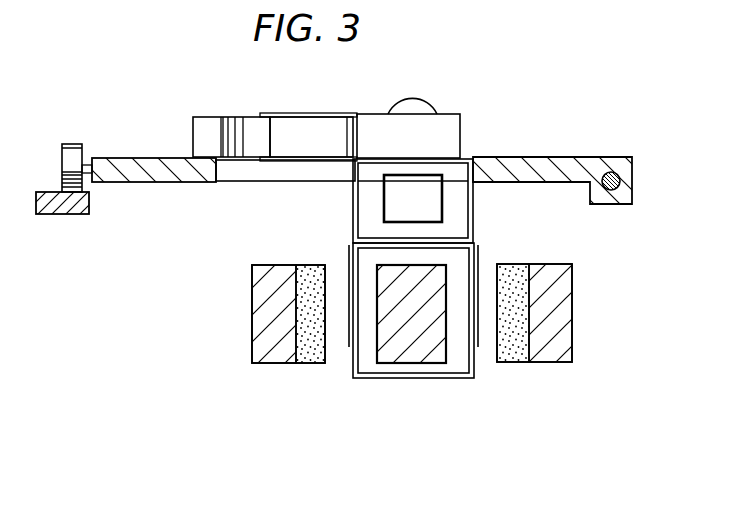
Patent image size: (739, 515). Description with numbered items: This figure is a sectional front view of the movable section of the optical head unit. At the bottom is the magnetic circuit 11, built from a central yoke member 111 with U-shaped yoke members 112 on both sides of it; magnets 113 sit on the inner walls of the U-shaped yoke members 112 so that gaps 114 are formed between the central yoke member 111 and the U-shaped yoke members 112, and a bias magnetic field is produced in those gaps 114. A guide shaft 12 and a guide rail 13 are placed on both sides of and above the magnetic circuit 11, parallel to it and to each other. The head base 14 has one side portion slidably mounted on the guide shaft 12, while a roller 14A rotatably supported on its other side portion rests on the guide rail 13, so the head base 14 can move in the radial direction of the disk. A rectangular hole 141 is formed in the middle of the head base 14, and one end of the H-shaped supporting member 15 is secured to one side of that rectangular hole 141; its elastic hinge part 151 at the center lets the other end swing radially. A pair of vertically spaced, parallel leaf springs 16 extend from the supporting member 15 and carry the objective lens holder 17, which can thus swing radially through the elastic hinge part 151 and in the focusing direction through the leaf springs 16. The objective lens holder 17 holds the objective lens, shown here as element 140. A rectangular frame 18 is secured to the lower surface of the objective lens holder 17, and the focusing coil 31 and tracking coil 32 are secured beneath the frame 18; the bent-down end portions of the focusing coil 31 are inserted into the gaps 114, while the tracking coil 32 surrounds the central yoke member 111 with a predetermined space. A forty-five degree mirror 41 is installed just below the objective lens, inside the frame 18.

The magnetic circuit 11 is at (548, 370).
The central yoke member 111 is at (417, 345).
The U-shaped yoke member 112 is at (265, 350).
The magnet 113 is at (308, 354).
The gap 114 is at (336, 345).
The guide shaft 12 is at (611, 172).
The guide rail 13 is at (70, 205).
The head base 14 is at (150, 172).
The roller 14A is at (68, 148).
The rectangular hole 141 is at (232, 172).
The supporting member 15 is at (206, 117).
The elastic hinge part 151 is at (233, 116).
The leaf spring 16 is at (323, 114).
The objective lens holder 17 is at (446, 126).
The mirror 140 is at (418, 107).
The rectangular frame 18 is at (473, 205).
The 45° mirror 41 is at (425, 186).
The focusing coil 31 is at (348, 270).
The tracking coil 32 is at (383, 380).